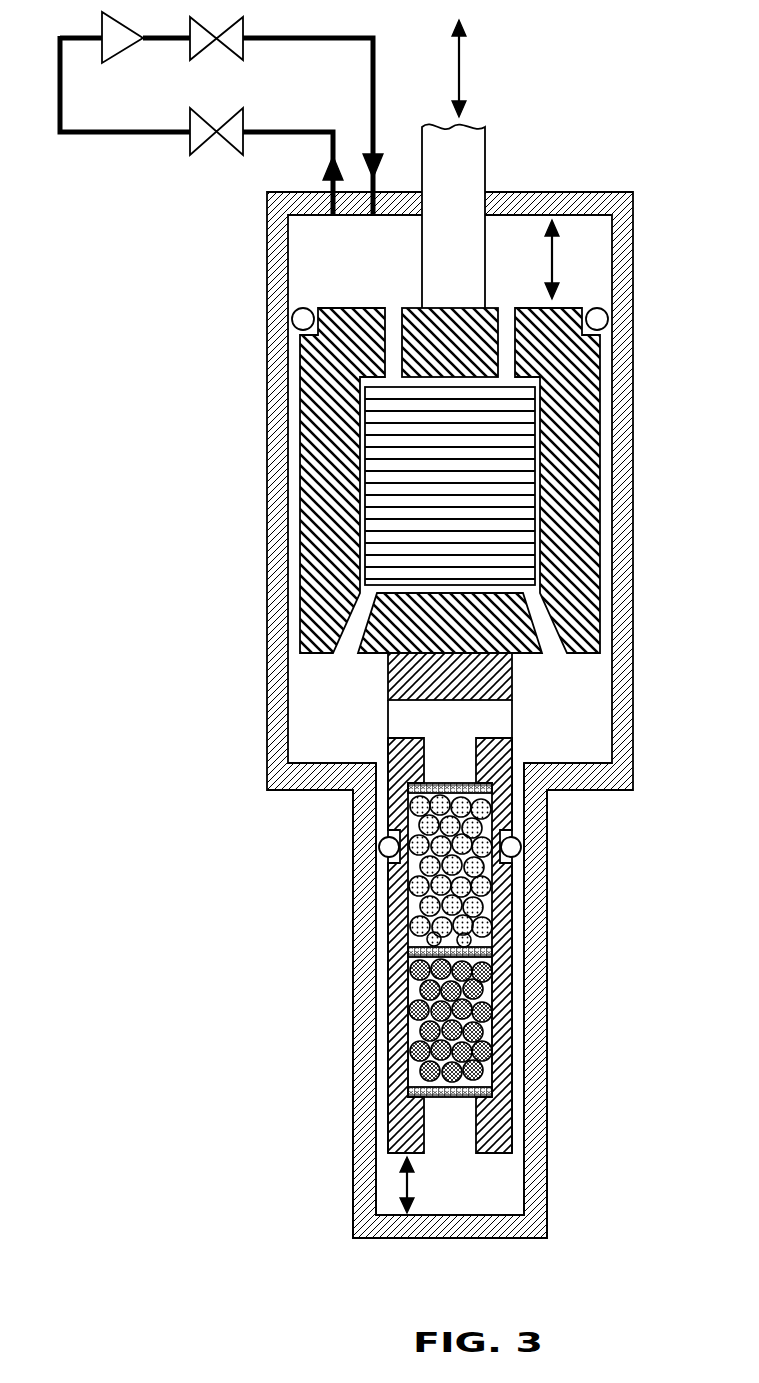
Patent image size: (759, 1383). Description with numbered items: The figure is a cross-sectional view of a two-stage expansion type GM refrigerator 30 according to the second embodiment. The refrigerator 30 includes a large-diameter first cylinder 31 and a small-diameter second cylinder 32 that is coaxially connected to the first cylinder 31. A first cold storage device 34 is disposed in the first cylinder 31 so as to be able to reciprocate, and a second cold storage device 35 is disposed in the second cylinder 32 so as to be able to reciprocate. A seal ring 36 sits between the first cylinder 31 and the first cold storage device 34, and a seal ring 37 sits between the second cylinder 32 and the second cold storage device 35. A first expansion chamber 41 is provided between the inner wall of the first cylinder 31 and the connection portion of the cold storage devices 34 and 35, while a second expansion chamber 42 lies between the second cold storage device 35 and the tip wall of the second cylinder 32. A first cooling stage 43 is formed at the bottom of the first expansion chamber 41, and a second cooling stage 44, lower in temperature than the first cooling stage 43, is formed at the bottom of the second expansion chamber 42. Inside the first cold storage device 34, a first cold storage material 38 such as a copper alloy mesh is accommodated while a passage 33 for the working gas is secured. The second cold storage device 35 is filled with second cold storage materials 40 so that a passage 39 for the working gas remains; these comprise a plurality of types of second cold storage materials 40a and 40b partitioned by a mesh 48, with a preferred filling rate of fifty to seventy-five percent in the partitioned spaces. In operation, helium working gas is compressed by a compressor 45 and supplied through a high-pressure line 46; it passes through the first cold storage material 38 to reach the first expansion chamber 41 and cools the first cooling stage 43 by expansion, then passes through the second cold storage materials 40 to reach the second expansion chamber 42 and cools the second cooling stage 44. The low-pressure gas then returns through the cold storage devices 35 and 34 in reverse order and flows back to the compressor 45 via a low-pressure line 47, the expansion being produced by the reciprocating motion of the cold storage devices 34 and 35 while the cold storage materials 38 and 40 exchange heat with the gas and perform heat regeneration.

The refrigerator 30 is at (609, 140).
The first cylinder 31 is at (272, 252).
The second cylinder 32 is at (354, 928).
The passage 33 is at (387, 330).
The first cold storage device 34 is at (312, 474).
The second cold storage device 35 is at (416, 988).
The seal ring 36 is at (296, 318).
The seal ring 37 is at (380, 846).
The first cold storage material 38 is at (410, 550).
The passage 39 is at (438, 768).
The second cold storage materials 40 is at (559, 940).
The second cold storage material 40a is at (470, 878).
The second cold storage material 40b is at (518, 1020).
The first expansion chamber 41 is at (572, 722).
The second expansion chamber 42 is at (492, 1174).
The first cooling stage 43 is at (605, 792).
The second cooling stage 44 is at (487, 1239).
The compressor 45 is at (127, 50).
The high-pressure line 46 is at (313, 40).
The low-pressure line 47 is at (272, 138).
The mesh 48 is at (476, 952).